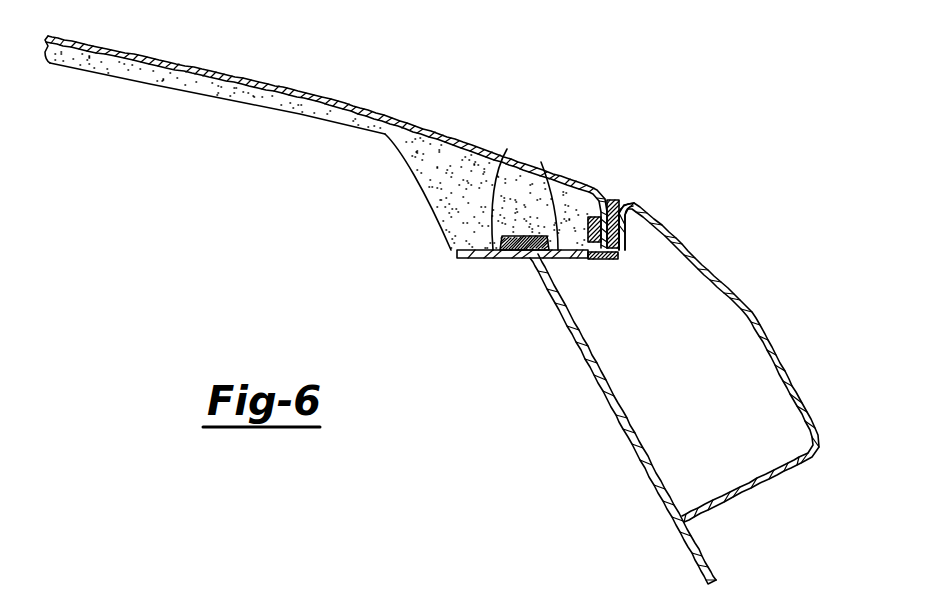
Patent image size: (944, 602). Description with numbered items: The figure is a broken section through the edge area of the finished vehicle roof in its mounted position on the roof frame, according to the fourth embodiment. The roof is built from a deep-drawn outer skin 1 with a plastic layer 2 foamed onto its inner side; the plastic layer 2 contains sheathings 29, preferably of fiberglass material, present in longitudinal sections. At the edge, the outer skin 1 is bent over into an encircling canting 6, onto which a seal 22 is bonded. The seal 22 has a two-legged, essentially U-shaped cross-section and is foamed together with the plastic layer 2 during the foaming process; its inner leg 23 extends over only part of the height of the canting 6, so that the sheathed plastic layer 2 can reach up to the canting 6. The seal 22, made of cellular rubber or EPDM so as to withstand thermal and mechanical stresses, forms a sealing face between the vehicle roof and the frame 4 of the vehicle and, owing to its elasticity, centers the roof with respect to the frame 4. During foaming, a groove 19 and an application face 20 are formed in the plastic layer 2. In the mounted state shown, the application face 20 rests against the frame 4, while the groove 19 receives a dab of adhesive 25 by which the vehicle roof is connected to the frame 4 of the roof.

The outer skin 1 is at (236, 72).
The plastic layer 2 is at (204, 94).
The frame of the roof 4 is at (632, 423).
The canting 6 is at (612, 207).
The groove 19 is at (512, 253).
The application face 20 is at (541, 162).
The seal 22 is at (613, 253).
The inner leg 23 is at (590, 217).
The dab of adhesive 25 is at (521, 259).
The sheathing 29 is at (387, 124).